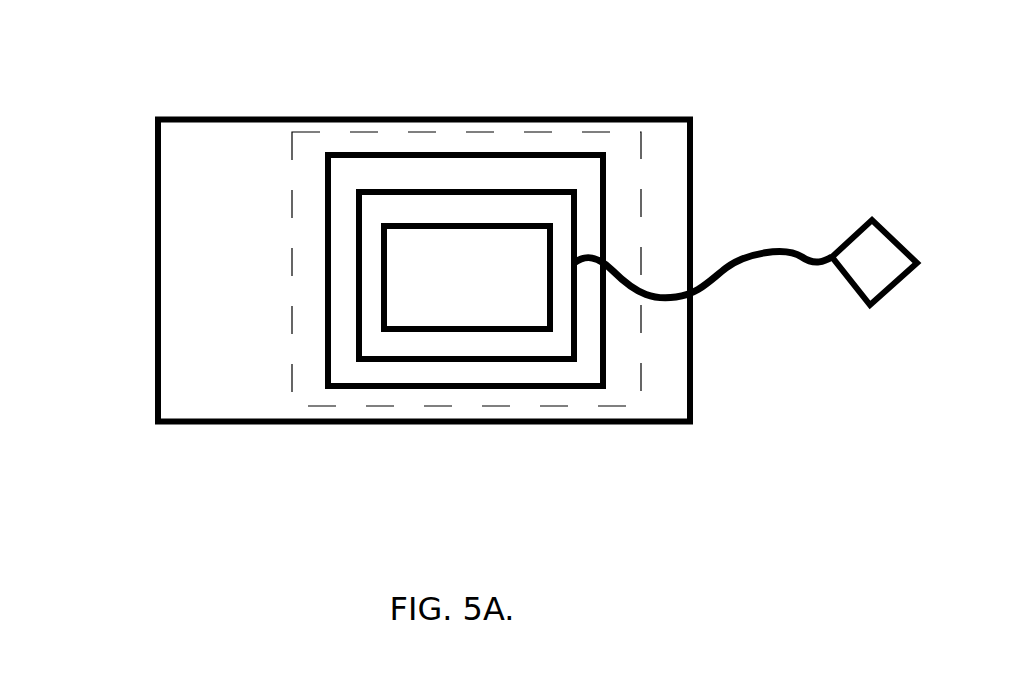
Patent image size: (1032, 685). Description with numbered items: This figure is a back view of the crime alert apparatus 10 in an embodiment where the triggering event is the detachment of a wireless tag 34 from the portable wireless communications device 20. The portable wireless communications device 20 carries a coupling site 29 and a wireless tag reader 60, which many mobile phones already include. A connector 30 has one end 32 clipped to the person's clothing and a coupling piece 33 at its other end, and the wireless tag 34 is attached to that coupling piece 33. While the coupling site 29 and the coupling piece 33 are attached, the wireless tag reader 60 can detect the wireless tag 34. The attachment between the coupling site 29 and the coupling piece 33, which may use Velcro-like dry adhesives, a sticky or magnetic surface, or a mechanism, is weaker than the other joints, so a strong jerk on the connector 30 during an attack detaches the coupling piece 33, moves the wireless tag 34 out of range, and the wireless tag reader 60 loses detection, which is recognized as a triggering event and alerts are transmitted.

The crime alert apparatus 10 is at (637, 79).
The portable wireless communications device 20 is at (156, 194).
The wireless tag reader 60 is at (307, 208).
The coupling site 29 is at (343, 282).
The coupling piece 33 is at (357, 305).
The wireless tag 34 is at (447, 310).
The connector 30 is at (780, 258).
The end 32 is at (857, 258).